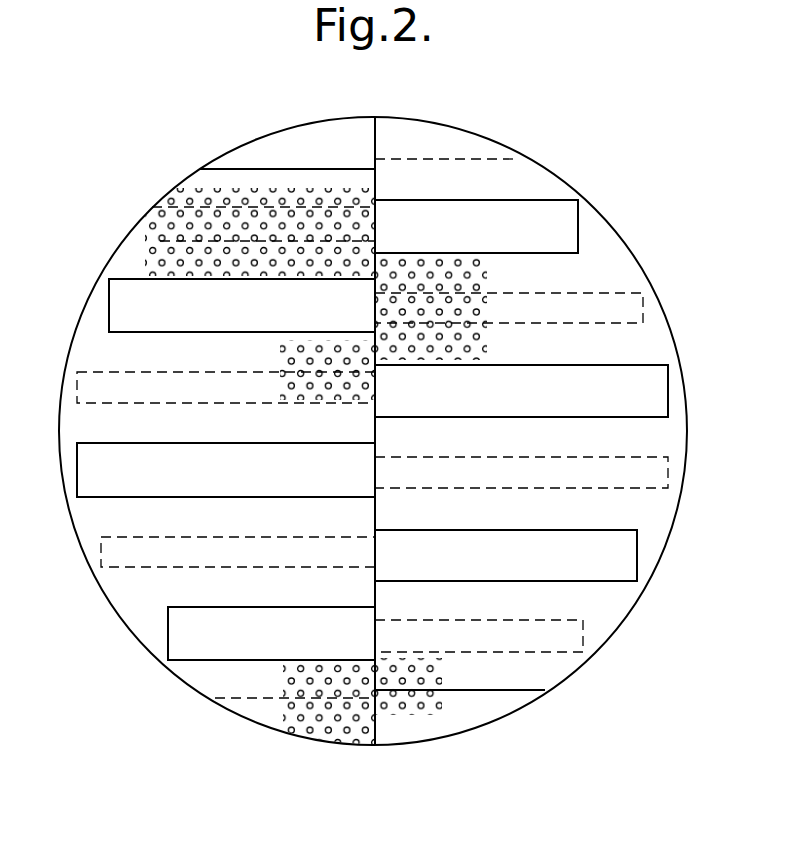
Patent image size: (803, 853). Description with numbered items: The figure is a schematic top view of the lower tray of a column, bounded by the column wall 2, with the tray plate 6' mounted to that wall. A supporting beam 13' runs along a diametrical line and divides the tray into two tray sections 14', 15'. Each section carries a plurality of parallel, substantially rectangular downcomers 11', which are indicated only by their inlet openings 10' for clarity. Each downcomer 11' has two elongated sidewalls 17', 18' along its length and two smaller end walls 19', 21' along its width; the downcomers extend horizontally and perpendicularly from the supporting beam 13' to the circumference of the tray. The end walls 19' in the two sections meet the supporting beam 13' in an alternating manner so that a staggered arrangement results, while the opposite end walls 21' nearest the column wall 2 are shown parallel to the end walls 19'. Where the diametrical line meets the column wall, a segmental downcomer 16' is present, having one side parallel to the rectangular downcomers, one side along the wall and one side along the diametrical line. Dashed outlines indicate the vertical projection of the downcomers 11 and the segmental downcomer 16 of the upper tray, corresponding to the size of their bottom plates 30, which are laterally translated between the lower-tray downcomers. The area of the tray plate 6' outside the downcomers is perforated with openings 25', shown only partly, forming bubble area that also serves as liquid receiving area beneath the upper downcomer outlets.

The column wall 2 is at (474, 134).
The tray plate 6' is at (658, 283).
The inlet opening 10' is at (350, 366).
The downcomer 11 is at (374, 428).
The downcomer 11' is at (378, 428).
The supporting beam 13' is at (406, 414).
The tray section 14' is at (181, 715).
The tray section 15' is at (565, 722).
The segmental downcomer 16 is at (382, 448).
The segmental downcomer 16' is at (325, 453).
The elongated sidewall 17' is at (428, 340).
The elongated sidewall 18' is at (321, 356).
The end wall 19' is at (372, 429).
The end wall 21' is at (382, 429).
The perforated area 25' is at (313, 517).
The bottom plate 30 is at (160, 207).